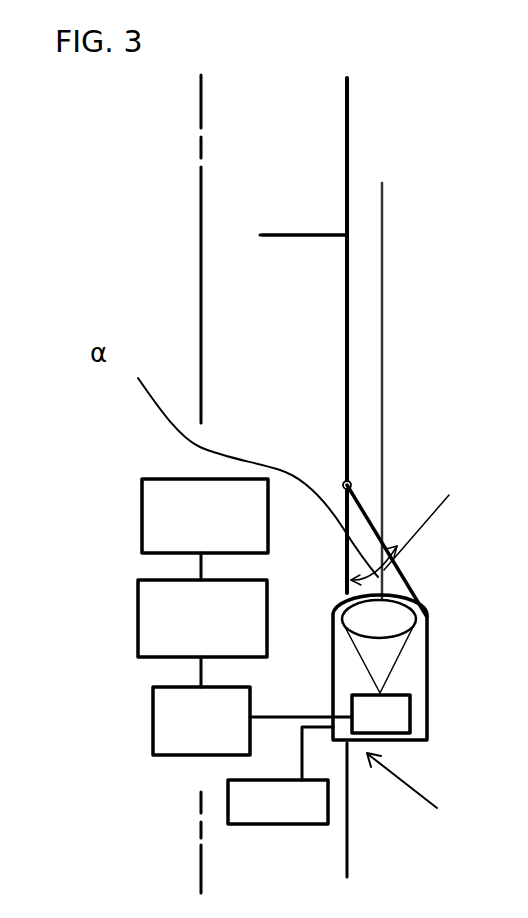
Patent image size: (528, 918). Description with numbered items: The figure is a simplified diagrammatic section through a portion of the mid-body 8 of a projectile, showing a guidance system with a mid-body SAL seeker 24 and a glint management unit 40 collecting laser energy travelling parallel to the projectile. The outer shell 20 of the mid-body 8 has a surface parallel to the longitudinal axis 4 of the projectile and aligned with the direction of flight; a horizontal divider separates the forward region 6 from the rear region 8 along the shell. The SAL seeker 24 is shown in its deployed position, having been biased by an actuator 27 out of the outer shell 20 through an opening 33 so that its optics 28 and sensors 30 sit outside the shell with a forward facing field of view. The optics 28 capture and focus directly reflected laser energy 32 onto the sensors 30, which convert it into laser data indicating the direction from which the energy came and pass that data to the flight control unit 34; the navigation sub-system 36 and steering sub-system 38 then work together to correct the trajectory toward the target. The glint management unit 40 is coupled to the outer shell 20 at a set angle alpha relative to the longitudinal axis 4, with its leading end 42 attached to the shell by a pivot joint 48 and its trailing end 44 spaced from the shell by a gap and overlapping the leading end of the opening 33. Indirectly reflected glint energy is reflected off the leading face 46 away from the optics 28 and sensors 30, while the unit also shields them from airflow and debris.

The longitudinal axis 4 is at (201, 862).
The front region 6 is at (330, 219).
The mid-body 8 is at (330, 284).
The outer shell 20 is at (349, 845).
The SAL seeker 24 is at (427, 680).
The actuator 27 is at (228, 790).
The optics 28 is at (400, 620).
The sensors 30 is at (400, 717).
The directly reflected laser energy 32 is at (385, 228).
The opening 33 is at (416, 789).
The flight control unit 34 is at (153, 720).
The navigation sub-system 36 is at (138, 618).
The steering sub-system 38 is at (142, 512).
The glint management unit 40 is at (402, 565).
The leading end 42 is at (357, 470).
The trailing end 44 is at (421, 592).
The leading face 46 is at (435, 525).
The pivot joint 48 is at (350, 482).